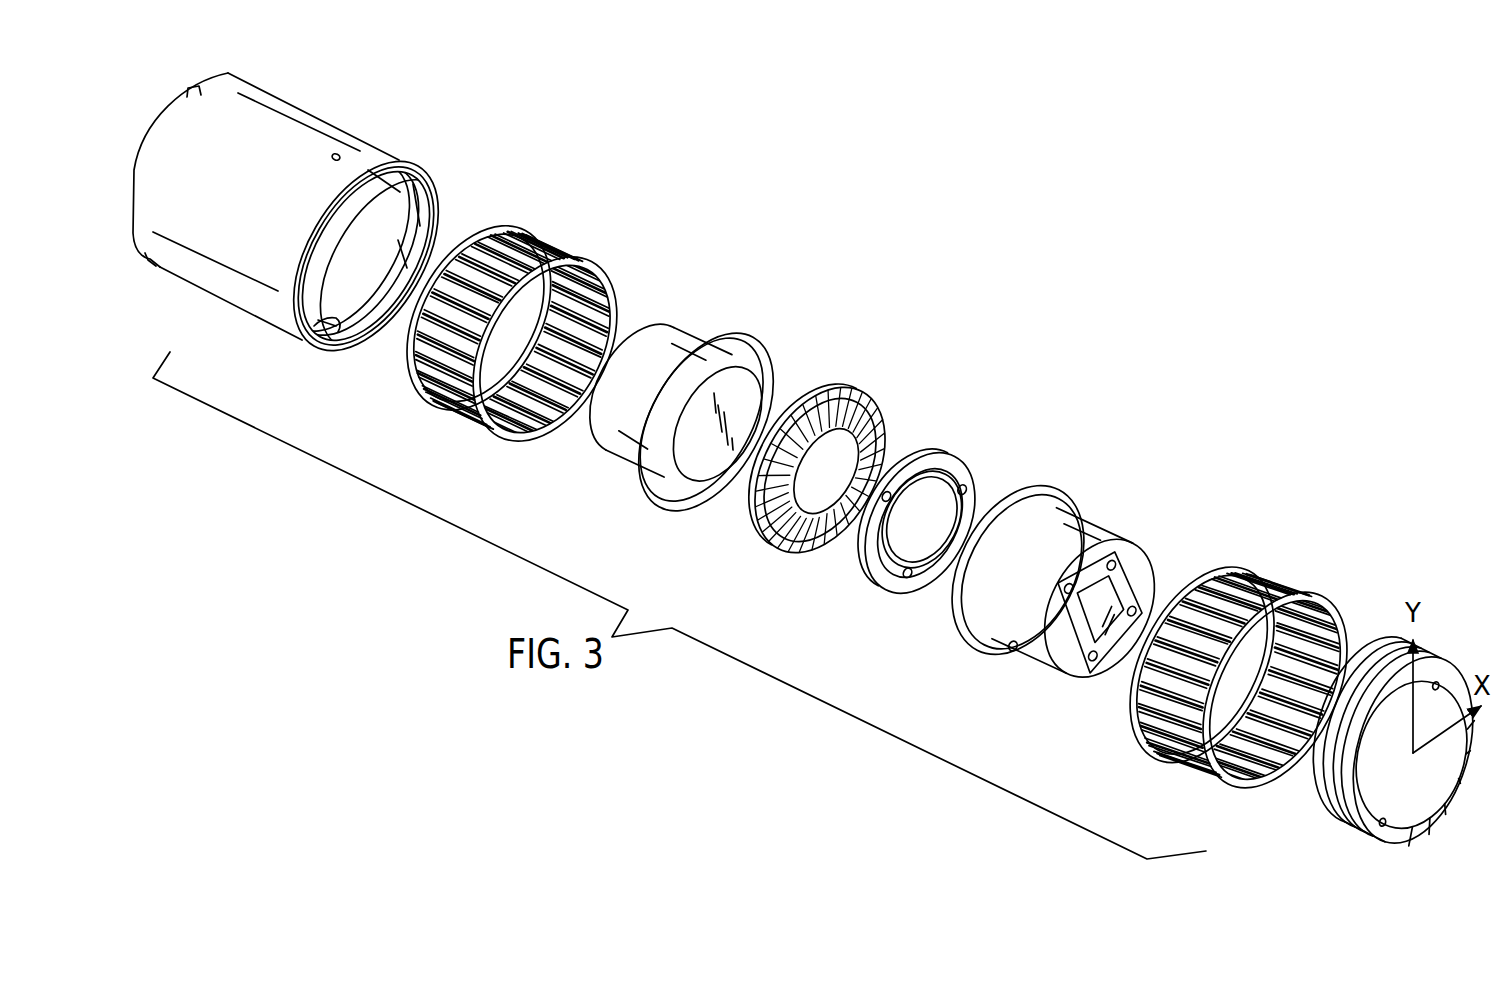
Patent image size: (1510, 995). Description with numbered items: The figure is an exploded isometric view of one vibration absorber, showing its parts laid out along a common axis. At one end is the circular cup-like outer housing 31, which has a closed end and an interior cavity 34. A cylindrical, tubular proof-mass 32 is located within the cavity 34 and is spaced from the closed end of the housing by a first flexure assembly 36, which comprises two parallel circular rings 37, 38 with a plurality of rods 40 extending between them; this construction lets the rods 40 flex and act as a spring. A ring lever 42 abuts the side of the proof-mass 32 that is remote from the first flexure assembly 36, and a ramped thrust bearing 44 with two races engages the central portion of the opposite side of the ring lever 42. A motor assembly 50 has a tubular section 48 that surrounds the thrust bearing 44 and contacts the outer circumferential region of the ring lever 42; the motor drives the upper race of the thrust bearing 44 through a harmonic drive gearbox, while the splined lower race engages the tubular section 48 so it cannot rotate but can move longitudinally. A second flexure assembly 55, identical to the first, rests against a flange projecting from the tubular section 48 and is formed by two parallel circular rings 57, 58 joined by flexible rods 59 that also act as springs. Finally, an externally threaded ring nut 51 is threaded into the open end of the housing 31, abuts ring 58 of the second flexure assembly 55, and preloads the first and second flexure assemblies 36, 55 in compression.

The outer housing 31 is at (217, 287).
The proof-mass 32 is at (617, 462).
The cavity 34 is at (330, 318).
The first flexure assembly 36 is at (472, 296).
The circular ring 37 is at (514, 221).
The circular ring 38 is at (587, 260).
The rods 40 is at (491, 258).
The ring lever 42 is at (753, 534).
The ramped thrust bearing 44 is at (868, 578).
The tubular section 48 is at (949, 612).
The motor assembly 50 is at (1031, 666).
The ring nut 51 is at (1338, 798).
The second flexure assembly 55 is at (1237, 640).
The circular ring 57 is at (1238, 567).
The circular ring 58 is at (1313, 607).
The rods 59 is at (1196, 606).